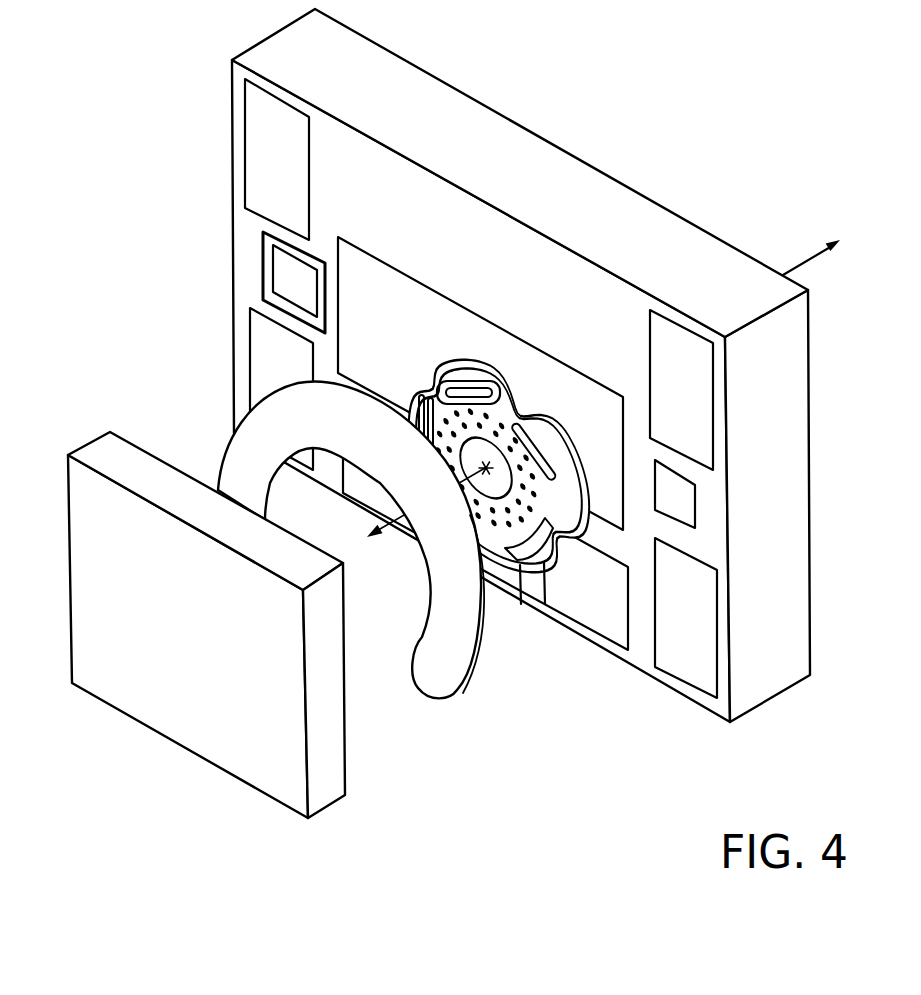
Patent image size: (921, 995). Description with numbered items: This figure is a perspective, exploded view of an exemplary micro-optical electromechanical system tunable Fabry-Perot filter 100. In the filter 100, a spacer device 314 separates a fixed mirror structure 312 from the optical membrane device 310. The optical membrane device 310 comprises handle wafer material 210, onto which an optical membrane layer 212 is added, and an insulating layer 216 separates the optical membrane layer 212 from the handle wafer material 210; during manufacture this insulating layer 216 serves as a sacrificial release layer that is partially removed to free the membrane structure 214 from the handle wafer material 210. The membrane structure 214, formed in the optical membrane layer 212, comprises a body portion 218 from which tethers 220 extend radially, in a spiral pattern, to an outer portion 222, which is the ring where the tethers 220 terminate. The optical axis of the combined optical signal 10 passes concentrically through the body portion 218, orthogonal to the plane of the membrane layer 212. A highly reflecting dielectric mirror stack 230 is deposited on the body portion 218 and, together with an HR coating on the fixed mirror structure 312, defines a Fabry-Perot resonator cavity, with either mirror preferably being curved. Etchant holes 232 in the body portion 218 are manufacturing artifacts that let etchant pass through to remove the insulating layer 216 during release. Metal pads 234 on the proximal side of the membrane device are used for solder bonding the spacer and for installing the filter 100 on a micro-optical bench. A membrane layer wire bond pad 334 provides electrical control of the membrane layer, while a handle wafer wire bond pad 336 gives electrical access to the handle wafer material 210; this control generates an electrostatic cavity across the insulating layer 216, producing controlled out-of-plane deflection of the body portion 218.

The tunable Fabry-Perot filter 100 is at (485, 413).
The combined optical signal 10 is at (414, 395).
The handle wafer material 210 is at (532, 365).
The optical membrane device 310 is at (812, 318).
The insulating layer 216 is at (727, 432).
The handle wafer wire bond pad 336 is at (262, 268).
The membrane layer wire bond pad 334 is at (700, 500).
The metal pads 234 is at (713, 645).
The highly reflecting dielectric mirror stack 230 is at (512, 481).
The etchant holes 232 is at (525, 450).
The tethers 220 is at (486, 378).
The body portion 218 is at (506, 392).
The membrane structure 214 is at (452, 378).
The optical membrane layer 212 is at (522, 582).
The outer portion 222 is at (546, 570).
The spacer device 314 is at (462, 688).
The fixed mirror structure 312 is at (345, 772).